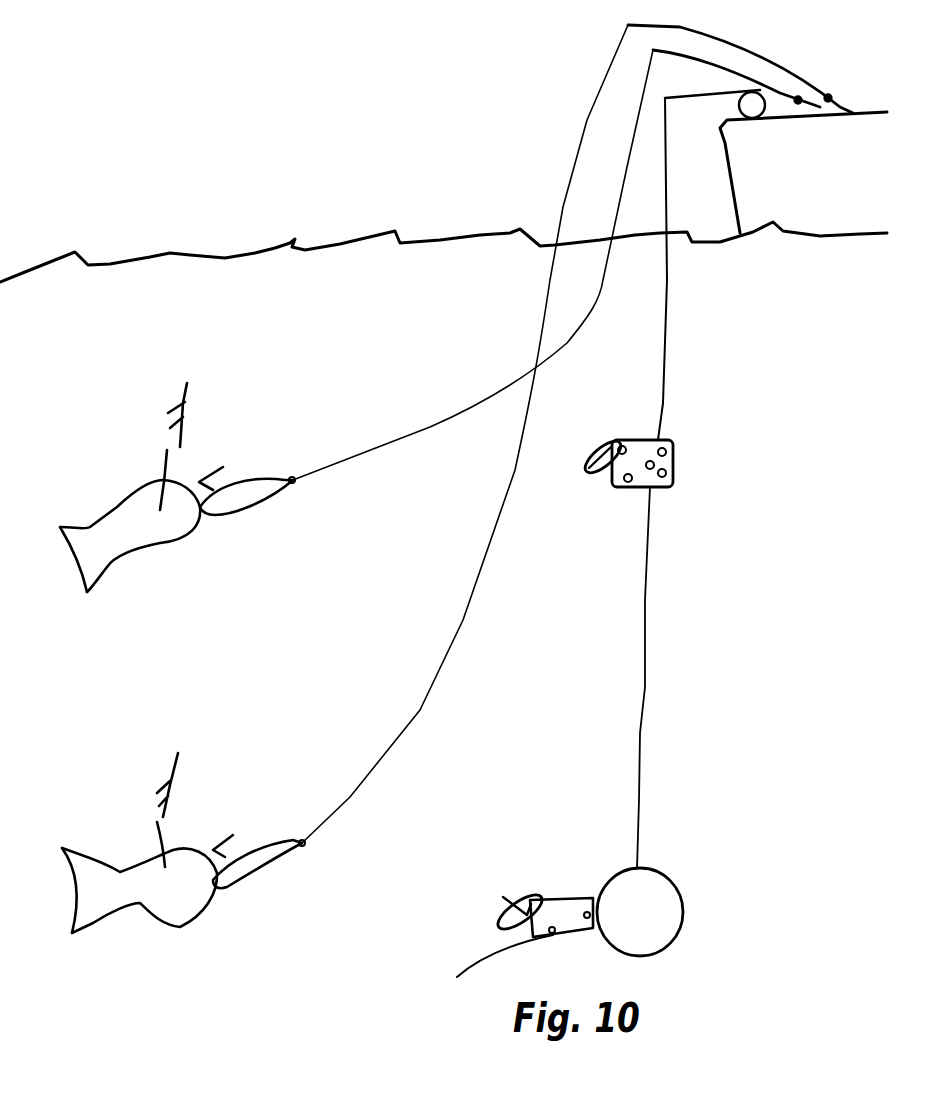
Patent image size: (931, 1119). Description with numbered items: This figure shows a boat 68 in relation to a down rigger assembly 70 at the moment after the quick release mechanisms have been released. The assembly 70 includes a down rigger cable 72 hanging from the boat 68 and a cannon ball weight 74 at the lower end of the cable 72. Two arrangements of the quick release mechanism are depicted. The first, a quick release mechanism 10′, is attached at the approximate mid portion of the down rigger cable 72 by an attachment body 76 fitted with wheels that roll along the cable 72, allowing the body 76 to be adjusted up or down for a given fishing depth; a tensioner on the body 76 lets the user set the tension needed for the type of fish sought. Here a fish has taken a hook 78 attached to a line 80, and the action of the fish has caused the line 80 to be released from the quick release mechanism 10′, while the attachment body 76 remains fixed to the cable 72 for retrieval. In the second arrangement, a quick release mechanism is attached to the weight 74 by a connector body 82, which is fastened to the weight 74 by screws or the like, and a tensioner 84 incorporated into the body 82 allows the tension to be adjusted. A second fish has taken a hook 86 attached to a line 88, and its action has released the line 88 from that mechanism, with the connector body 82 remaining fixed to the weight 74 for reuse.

The boat 68 is at (800, 205).
The down rigger assembly 70 is at (683, 702).
The down rigger cable 72 is at (640, 783).
The weight 74 is at (640, 450).
The attachment body 76 is at (622, 488).
The hook 78 is at (263, 488).
The line 80 is at (350, 460).
The connector body 82 is at (573, 937).
The tensioner 84 is at (495, 979).
The hook 86 is at (228, 880).
The line 88 is at (427, 700).
The quick release mechanism 10′ is at (593, 443).